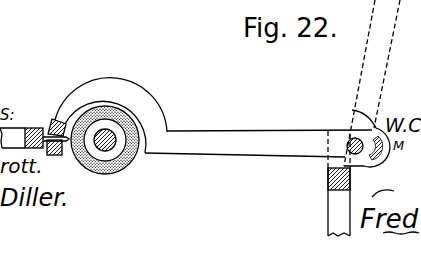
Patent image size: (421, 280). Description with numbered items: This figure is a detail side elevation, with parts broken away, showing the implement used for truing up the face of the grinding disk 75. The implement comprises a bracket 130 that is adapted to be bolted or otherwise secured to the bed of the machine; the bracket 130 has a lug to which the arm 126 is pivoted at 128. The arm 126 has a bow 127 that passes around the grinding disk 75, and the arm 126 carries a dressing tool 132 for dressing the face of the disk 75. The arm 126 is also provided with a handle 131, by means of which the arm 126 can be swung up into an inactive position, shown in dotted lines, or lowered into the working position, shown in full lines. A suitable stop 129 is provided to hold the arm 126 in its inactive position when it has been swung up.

The grinding disk 75 is at (100, 163).
The arm 126 is at (213, 143).
The bow 127 is at (137, 80).
The pivot 128 is at (350, 150).
The stop 129 is at (366, 127).
The bracket 130 is at (340, 207).
The handle 131 is at (17, 138).
The dressing tool 132 is at (66, 148).